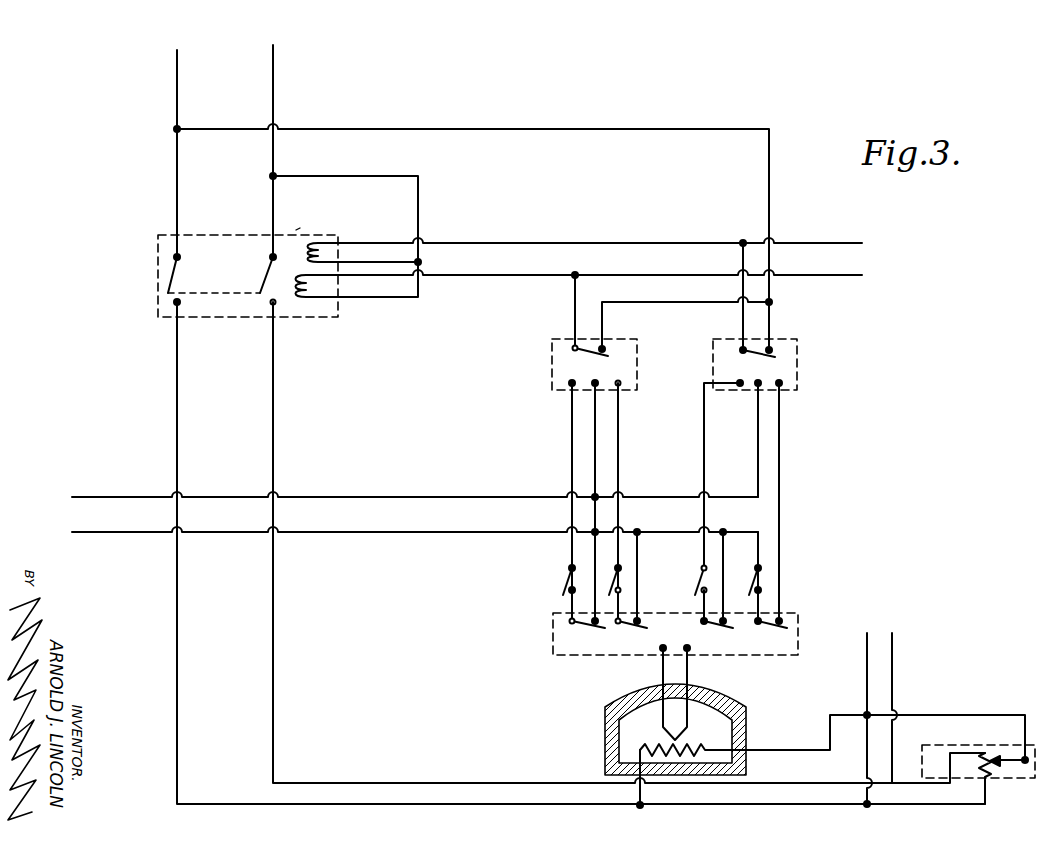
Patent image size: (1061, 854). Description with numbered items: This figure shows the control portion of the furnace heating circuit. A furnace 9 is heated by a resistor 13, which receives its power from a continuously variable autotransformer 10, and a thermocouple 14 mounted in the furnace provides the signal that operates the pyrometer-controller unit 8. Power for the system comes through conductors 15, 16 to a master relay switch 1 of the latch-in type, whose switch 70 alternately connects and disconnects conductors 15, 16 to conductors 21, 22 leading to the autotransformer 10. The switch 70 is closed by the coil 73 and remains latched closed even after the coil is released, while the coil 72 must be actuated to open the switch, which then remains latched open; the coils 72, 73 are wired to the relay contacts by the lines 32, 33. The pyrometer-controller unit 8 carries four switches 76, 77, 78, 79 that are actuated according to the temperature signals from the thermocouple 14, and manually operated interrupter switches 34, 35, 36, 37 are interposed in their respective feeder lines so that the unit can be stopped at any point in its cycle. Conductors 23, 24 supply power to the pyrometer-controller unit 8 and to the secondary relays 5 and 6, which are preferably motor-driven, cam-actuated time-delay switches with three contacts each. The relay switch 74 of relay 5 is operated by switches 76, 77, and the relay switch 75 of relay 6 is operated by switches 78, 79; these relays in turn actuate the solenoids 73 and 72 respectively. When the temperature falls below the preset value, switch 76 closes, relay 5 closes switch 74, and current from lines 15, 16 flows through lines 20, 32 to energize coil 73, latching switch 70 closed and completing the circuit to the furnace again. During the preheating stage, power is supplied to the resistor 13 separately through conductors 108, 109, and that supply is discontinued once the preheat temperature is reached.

The master relay switch 1 is at (298, 233).
The secondary relay 5 is at (547, 371).
The secondary relay 6 is at (795, 372).
The pyrometer-controller unit 8 is at (795, 648).
The furnace 9 is at (740, 692).
The continuously variable autotransformer 10 is at (1011, 779).
The resistor 13 is at (690, 750).
The thermocouple 14 is at (660, 719).
The conductor 15 is at (180, 178).
The conductor 16 is at (275, 163).
The line 20 is at (511, 129).
The conductor 21 is at (175, 412).
The conductor 22 is at (271, 412).
The conductor 23 is at (342, 534).
The conductor 24 is at (338, 496).
The line 32 is at (519, 278).
The conductor 33 is at (516, 242).
The manually operated interrupter switch 34 is at (564, 581).
The manually operated interrupter switch 35 is at (617, 581).
The manually operated interrupter switch 36 is at (703, 581).
The manually operated interrupter switch 37 is at (756, 581).
The switch 70 is at (205, 293).
The solenoid 72 is at (312, 251).
The solenoid 73 is at (301, 284).
The relay switch 74 is at (595, 357).
The relay switch 75 is at (756, 357).
The switch 76 is at (586, 635).
The switch 77 is at (631, 635).
The switch 78 is at (721, 635).
The switch 79 is at (772, 635).
The conductor 108 is at (866, 674).
The conductor 109 is at (893, 667).